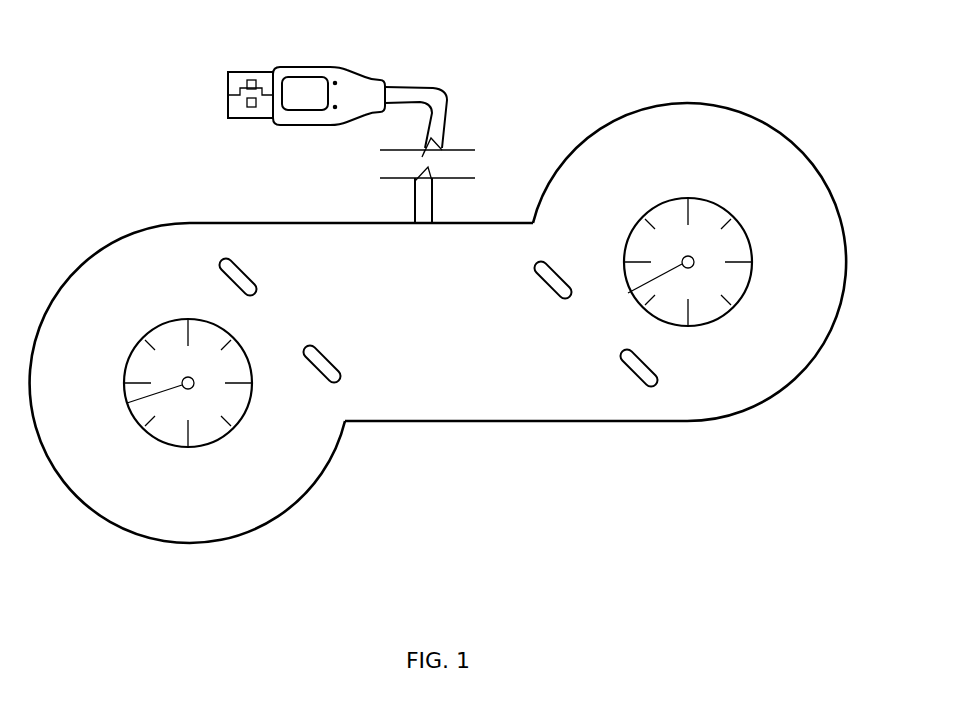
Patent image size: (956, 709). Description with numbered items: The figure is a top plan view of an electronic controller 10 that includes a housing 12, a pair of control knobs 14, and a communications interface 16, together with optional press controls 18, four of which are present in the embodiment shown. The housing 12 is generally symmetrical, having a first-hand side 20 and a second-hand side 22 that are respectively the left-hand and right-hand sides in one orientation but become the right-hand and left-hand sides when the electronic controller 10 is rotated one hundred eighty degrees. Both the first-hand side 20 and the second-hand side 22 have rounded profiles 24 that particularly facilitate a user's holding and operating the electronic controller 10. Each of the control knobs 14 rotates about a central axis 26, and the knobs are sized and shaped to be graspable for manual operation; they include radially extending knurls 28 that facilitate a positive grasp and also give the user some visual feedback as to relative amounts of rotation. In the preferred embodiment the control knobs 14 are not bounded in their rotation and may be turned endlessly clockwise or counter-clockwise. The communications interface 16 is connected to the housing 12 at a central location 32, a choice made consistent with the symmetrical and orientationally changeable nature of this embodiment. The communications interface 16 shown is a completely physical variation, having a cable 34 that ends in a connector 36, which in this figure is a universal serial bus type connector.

The electronic controller 10 is at (438, 363).
The housing 12 is at (425, 338).
The control knobs 14 is at (409, 307).
The communications interface 16 is at (373, 124).
The press controls 18 is at (257, 282).
The first-hand side 20 is at (174, 496).
The second-hand side 22 is at (675, 169).
The rounded profiles 24 is at (438, 335).
The central axes 26 is at (127, 403).
The knurls 28 is at (236, 344).
The central location 32 is at (437, 222).
The cable 34 is at (437, 132).
The connector 36 is at (298, 72).